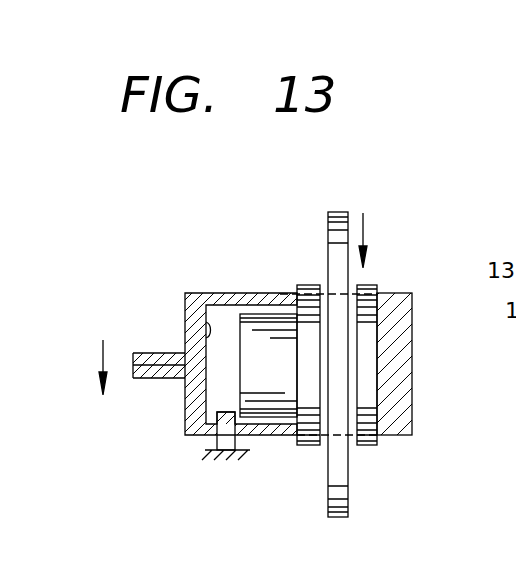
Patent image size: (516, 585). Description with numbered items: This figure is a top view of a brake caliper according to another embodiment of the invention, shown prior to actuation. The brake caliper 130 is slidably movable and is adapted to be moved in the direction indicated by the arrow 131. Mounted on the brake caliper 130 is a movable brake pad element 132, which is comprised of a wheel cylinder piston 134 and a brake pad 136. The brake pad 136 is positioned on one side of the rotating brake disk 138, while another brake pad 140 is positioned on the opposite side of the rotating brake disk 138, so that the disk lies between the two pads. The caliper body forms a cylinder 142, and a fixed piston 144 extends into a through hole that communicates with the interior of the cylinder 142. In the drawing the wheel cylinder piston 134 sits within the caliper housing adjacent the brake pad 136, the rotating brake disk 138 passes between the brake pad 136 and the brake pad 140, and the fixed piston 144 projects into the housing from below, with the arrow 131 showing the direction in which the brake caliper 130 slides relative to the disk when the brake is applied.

The brake caliper 130 is at (210, 290).
The arrow 131 is at (100, 358).
The movable brake pad element 132 is at (253, 313).
The wheel cylinder piston 134 is at (240, 380).
The brake pad 136 is at (307, 447).
The rotating brake disk 138 is at (348, 505).
The brake pad 140 is at (365, 447).
The cylinder 142 is at (206, 330).
The fixed piston 144 is at (222, 443).